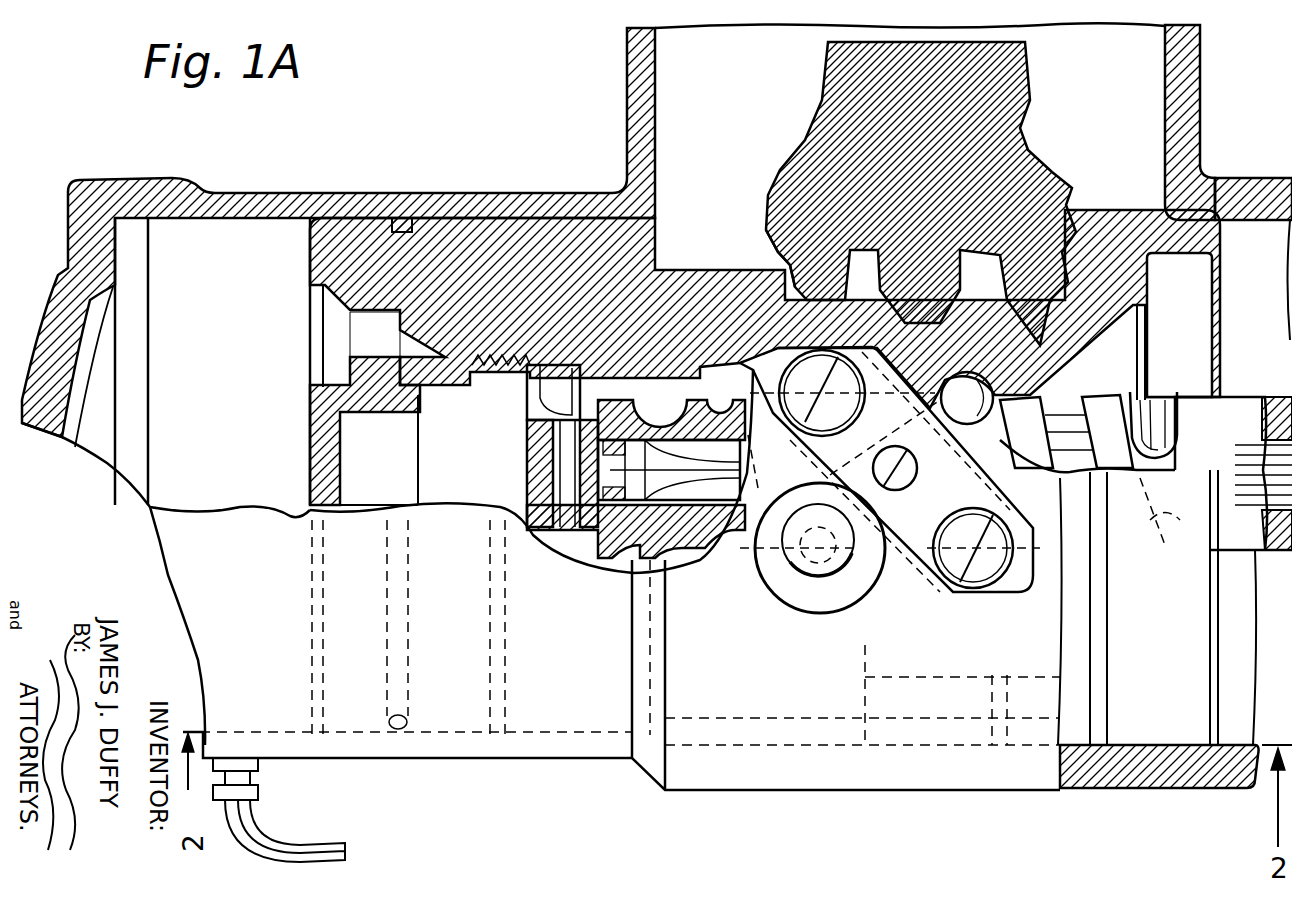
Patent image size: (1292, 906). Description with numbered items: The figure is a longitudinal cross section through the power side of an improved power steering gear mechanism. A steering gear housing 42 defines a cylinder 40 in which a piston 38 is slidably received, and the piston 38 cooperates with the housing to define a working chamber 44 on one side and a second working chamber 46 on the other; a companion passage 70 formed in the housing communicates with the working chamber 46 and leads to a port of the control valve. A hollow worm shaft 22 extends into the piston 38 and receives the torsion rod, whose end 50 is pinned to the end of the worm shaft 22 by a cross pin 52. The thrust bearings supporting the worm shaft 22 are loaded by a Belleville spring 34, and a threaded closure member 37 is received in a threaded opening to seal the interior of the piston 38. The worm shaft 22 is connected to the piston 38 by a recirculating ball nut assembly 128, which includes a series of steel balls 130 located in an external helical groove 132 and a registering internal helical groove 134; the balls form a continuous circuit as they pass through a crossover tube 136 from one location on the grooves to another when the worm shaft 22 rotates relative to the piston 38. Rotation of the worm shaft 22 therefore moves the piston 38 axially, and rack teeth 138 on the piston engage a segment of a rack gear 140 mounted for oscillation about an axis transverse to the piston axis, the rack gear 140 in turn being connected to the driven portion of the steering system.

The worm shaft 22 is at (1242, 397).
The Belleville spring 34 is at (530, 430).
The threaded closure member 37 is at (310, 415).
The piston 38 is at (345, 240).
The cylinder 40 is at (1256, 228).
The steering gear housing 42 is at (627, 102).
The working chamber 44 is at (190, 240).
The working chamber 46 is at (1155, 103).
The end of torsion rod 50 is at (582, 532).
The cross pin 52 is at (560, 535).
The companion passage 70 is at (340, 825).
The recirculating ball nut assembly 128 is at (900, 488).
The steel balls 130 is at (975, 378).
The external helical groove 132 is at (1142, 410).
The internal helical groove 134 is at (1080, 385).
The crossover tube 136 is at (835, 590).
The rack teeth 138 is at (795, 255).
The rack gear 140 is at (850, 95).